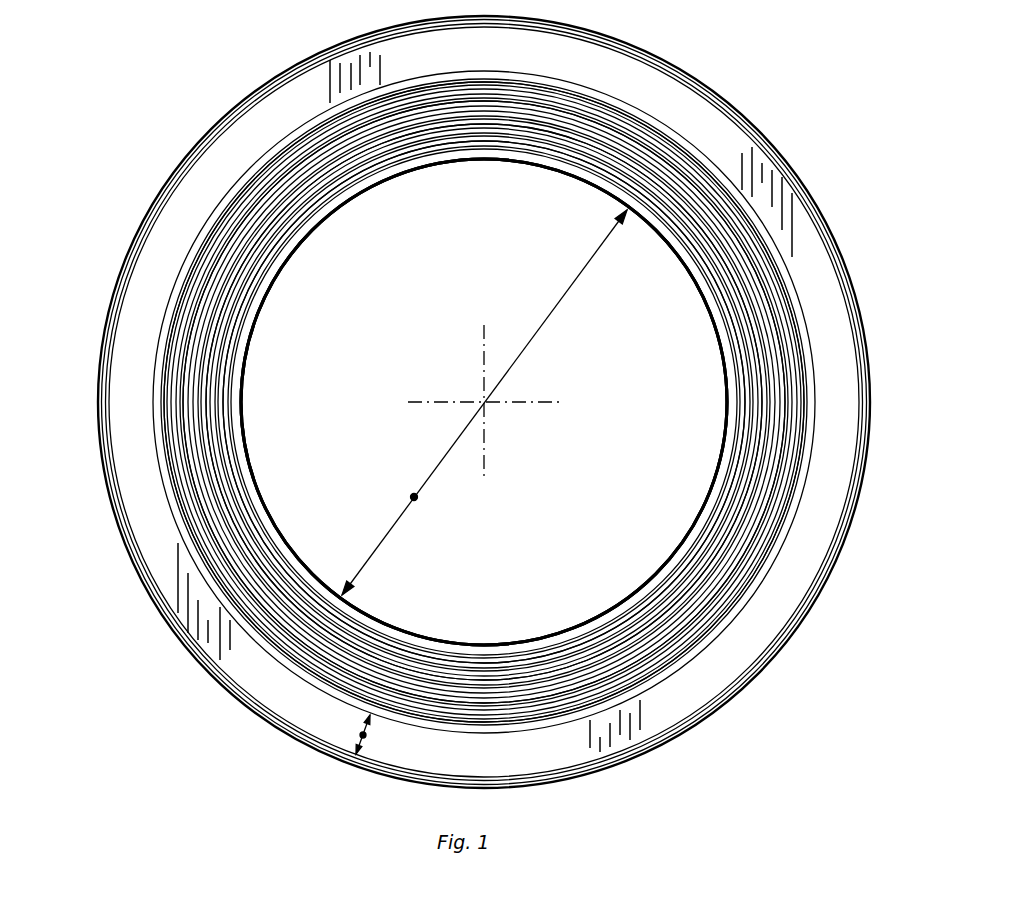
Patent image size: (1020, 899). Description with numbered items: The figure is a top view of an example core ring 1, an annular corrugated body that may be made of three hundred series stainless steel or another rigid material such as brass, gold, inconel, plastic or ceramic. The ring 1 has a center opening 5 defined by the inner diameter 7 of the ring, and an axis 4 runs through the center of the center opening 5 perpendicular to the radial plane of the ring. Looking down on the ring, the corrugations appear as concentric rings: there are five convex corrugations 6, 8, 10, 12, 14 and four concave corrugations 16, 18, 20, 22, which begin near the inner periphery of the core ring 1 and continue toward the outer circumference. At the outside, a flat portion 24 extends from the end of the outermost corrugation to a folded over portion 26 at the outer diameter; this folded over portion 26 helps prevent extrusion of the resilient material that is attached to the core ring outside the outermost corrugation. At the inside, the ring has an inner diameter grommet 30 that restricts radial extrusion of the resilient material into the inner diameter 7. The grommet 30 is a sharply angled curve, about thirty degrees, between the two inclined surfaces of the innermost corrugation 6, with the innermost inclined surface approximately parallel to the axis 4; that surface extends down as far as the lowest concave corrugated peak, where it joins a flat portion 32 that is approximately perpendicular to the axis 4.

The core ring 1 is at (748, 718).
The axis 4 is at (484, 402).
The center opening 5 is at (553, 484).
The convex corrugation 6 is at (393, 165).
The inner diameter 7 is at (414, 497).
The convex corrugation 8 is at (335, 180).
The convex corrugation 10 is at (292, 190).
The convex corrugation 12 is at (245, 210).
The convex corrugation 14 is at (195, 243).
The concave corrugation 16 is at (640, 193).
The concave corrugation 18 is at (678, 202).
The concave corrugation 20 is at (728, 225).
The concave corrugation 22 is at (767, 258).
The flat portion 24 is at (360, 727).
The folded over portion 26 is at (255, 710).
The inner diameter grommet 30 is at (330, 213).
The flat portion 32 is at (440, 165).